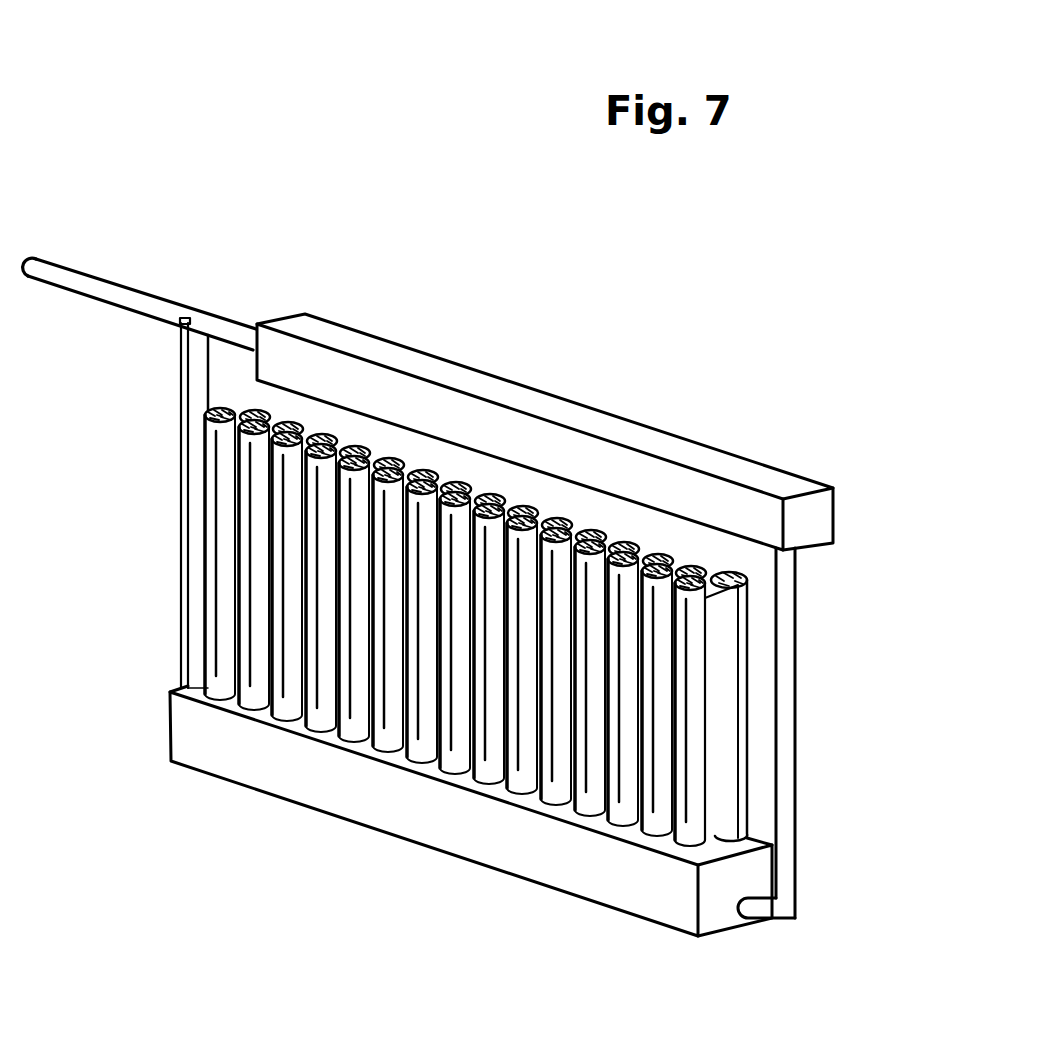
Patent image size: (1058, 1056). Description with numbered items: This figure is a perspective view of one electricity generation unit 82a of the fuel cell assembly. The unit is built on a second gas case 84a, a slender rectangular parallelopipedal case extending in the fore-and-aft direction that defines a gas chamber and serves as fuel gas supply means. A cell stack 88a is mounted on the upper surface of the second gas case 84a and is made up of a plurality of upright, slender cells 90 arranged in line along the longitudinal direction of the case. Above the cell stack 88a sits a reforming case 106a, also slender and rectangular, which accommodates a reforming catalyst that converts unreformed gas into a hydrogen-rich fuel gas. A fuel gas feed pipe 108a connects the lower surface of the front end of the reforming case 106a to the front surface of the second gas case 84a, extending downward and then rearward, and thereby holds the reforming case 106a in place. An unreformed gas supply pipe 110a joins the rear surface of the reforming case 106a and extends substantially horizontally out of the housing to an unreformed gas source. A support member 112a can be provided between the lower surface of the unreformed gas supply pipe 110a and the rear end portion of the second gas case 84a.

The electricity generation unit 82a is at (690, 424).
The second gas case 84a is at (632, 892).
The cell stack 88a is at (205, 513).
The cells 90 is at (318, 696).
The reforming case 106a is at (398, 346).
The fuel gas feed pipe 108a is at (797, 715).
The unreformed gas supply pipe 110a is at (97, 284).
The support member 112a is at (181, 608).